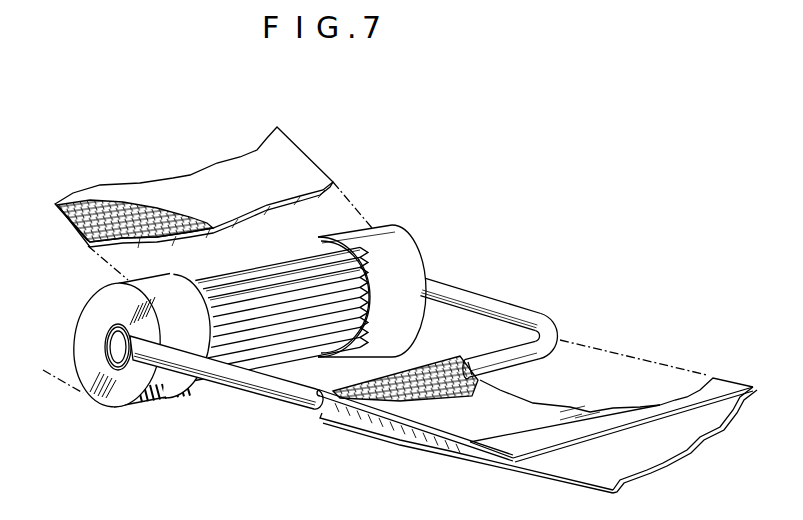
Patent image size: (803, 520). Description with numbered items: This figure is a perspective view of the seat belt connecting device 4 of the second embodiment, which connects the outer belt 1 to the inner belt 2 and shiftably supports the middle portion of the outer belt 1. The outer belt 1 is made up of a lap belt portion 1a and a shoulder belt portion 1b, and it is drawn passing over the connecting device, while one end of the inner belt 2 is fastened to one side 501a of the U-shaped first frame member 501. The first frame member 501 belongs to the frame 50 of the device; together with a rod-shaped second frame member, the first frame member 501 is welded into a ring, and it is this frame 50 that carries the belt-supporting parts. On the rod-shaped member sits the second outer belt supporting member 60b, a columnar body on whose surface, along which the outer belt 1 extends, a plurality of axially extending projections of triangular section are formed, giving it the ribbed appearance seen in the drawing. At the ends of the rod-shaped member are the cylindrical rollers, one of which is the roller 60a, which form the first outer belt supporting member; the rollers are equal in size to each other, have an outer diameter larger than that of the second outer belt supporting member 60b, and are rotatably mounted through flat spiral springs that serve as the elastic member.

The outer belt 1 is at (90, 249).
The lap belt portion 1a is at (55, 379).
The shoulder belt portion 1b is at (72, 232).
The inner belt 2 is at (507, 466).
The seat belt connecting device 4 is at (420, 247).
The frame 50 is at (509, 299).
The first frame member 501 is at (533, 318).
The one side of the first frame member 501a is at (517, 363).
The roller 60a is at (160, 404).
The second outer belt supporting member 60b is at (256, 272).